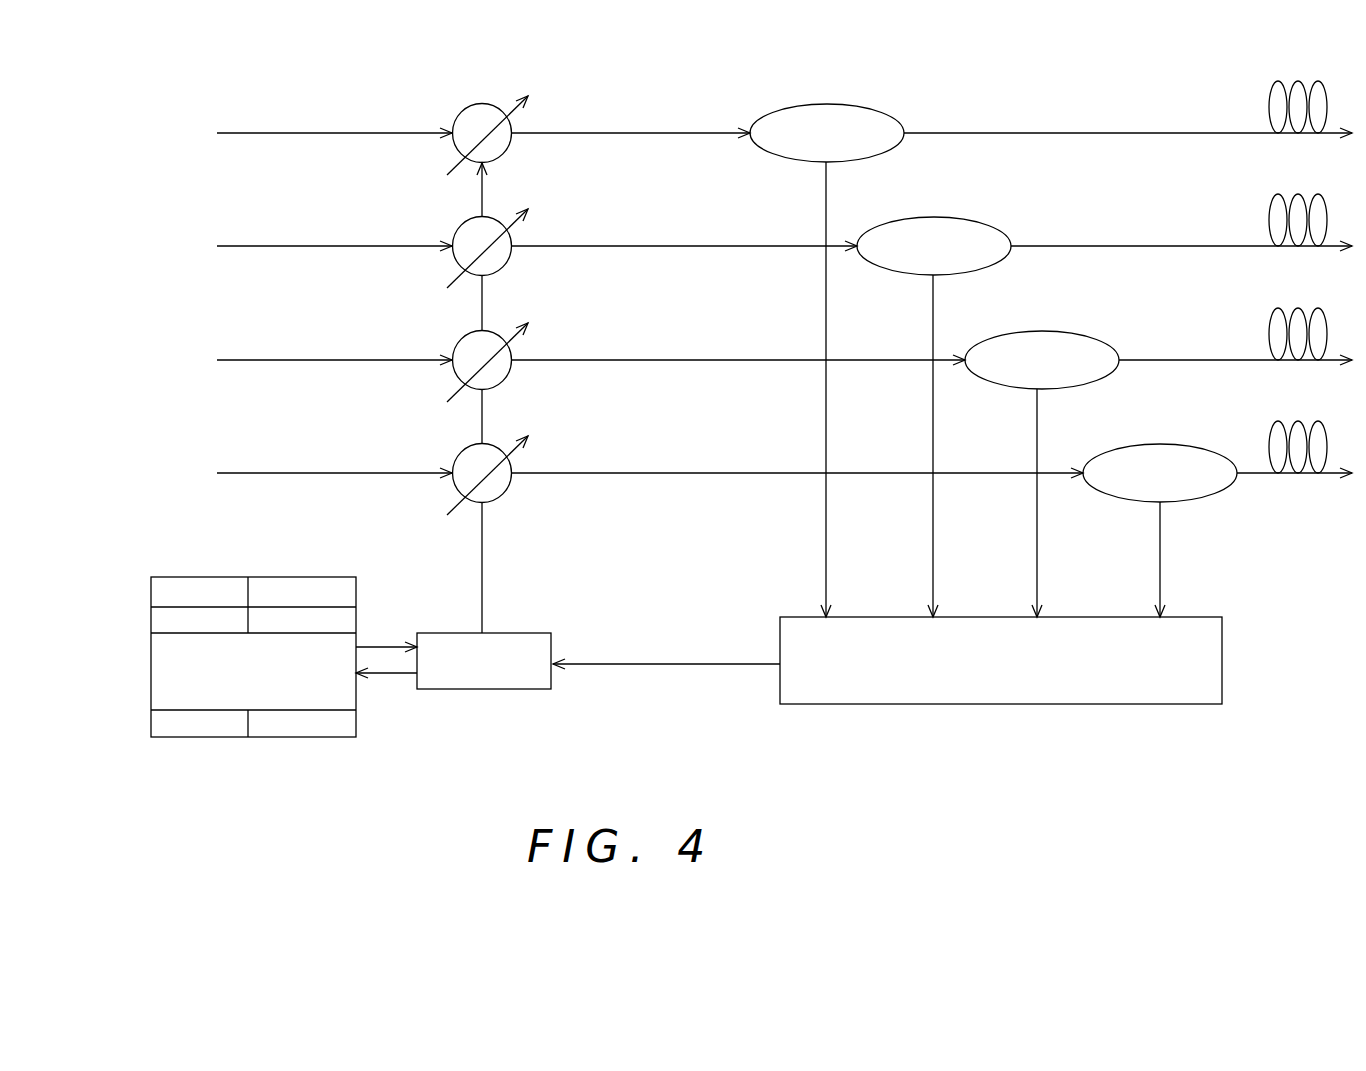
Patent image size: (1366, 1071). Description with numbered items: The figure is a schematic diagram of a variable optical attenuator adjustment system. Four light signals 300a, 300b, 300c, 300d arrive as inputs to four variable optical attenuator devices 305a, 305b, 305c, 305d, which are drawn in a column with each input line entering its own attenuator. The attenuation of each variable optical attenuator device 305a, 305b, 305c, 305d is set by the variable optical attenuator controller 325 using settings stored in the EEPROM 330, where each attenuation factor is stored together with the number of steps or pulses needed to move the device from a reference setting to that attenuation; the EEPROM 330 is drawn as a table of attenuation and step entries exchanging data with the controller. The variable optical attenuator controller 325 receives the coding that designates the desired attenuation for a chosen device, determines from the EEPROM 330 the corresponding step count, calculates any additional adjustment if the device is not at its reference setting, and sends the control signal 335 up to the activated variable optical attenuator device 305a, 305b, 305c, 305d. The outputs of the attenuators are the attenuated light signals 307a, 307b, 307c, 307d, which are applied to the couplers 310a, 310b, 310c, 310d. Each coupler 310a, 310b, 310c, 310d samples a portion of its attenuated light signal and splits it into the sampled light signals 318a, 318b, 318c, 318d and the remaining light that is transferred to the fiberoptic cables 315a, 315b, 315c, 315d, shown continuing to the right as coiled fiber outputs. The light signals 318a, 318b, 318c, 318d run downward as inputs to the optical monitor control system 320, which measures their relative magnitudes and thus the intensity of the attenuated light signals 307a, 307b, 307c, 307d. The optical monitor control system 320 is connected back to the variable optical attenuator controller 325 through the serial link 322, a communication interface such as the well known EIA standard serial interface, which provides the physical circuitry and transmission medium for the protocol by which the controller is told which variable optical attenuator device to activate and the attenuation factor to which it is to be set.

The light signal 300a is at (295, 134).
The light signal 300b is at (295, 247).
The light signal 300c is at (295, 361).
The light signal 300d is at (295, 474).
The variable optical attenuator device 305a is at (455, 150).
The variable optical attenuator device 305b is at (455, 263).
The variable optical attenuator device 305c is at (455, 377).
The variable optical attenuator device 305d is at (455, 490).
The attenuated light signal 307a is at (612, 133).
The attenuated light signal 307b is at (612, 246).
The attenuated light signal 307c is at (612, 360).
The attenuated light signal 307d is at (612, 473).
The coupler 310a is at (927, 95).
The coupler 310b is at (918, 216).
The coupler 310c is at (1005, 332).
The coupler 310d is at (1185, 447).
The fiberoptic cable 315a is at (1038, 132).
The fiberoptic cable 315b is at (1120, 244).
The fiberoptic cable 315c is at (1200, 358).
The fiberoptic cable 315d is at (1268, 471).
The light signal 318a is at (826, 563).
The light signal 318b is at (933, 563).
The light signal 318c is at (1037, 563).
The light signal 318d is at (1160, 563).
The optical monitor control system 320 is at (1222, 673).
The serial link 322 is at (657, 664).
The variable optical attenuator controller 325 is at (483, 690).
The EEPROM 330 is at (356, 722).
The control signal 335 is at (483, 557).